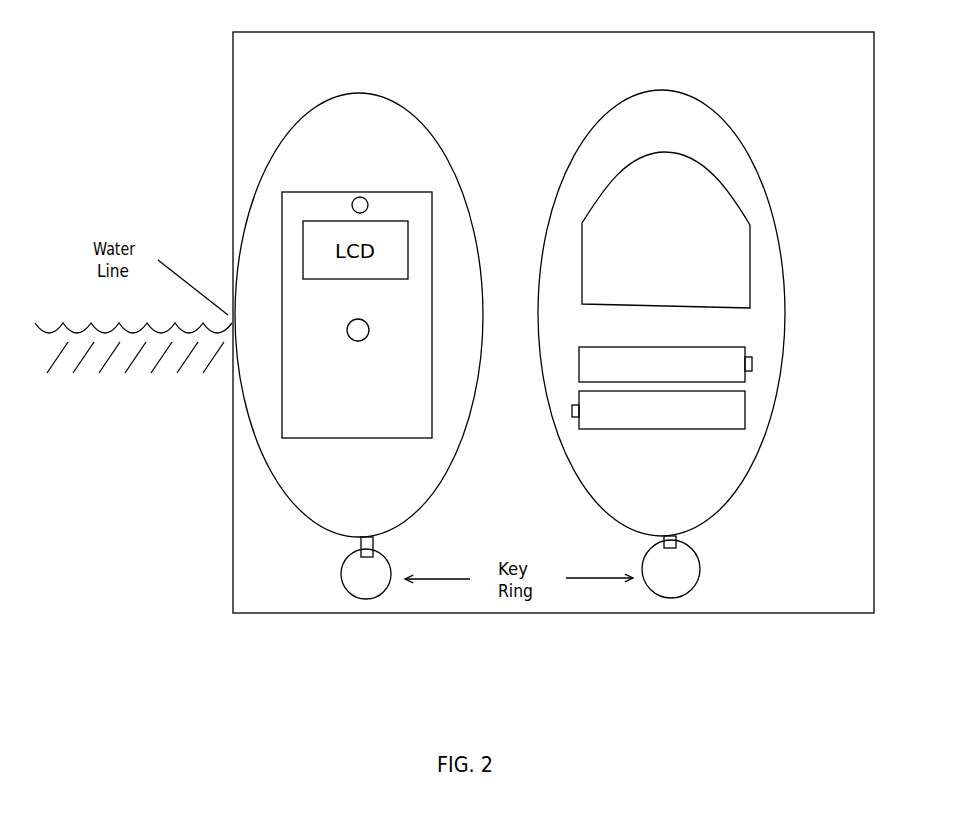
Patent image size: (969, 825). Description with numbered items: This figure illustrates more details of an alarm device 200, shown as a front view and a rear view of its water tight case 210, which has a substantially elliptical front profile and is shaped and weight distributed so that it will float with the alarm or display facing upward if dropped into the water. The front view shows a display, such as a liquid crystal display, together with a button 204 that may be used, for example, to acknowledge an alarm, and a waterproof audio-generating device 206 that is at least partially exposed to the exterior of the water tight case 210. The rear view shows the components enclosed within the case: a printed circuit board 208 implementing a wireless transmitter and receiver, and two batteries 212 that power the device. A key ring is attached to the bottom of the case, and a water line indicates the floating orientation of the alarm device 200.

The floating key fob device 200 is at (672, 613).
The buttons 204 is at (372, 332).
The waterproof audio-generating device 206 is at (355, 197).
The printed circuit board 208 is at (673, 242).
The water tight case 210 is at (563, 192).
The batteries 212 is at (752, 357).